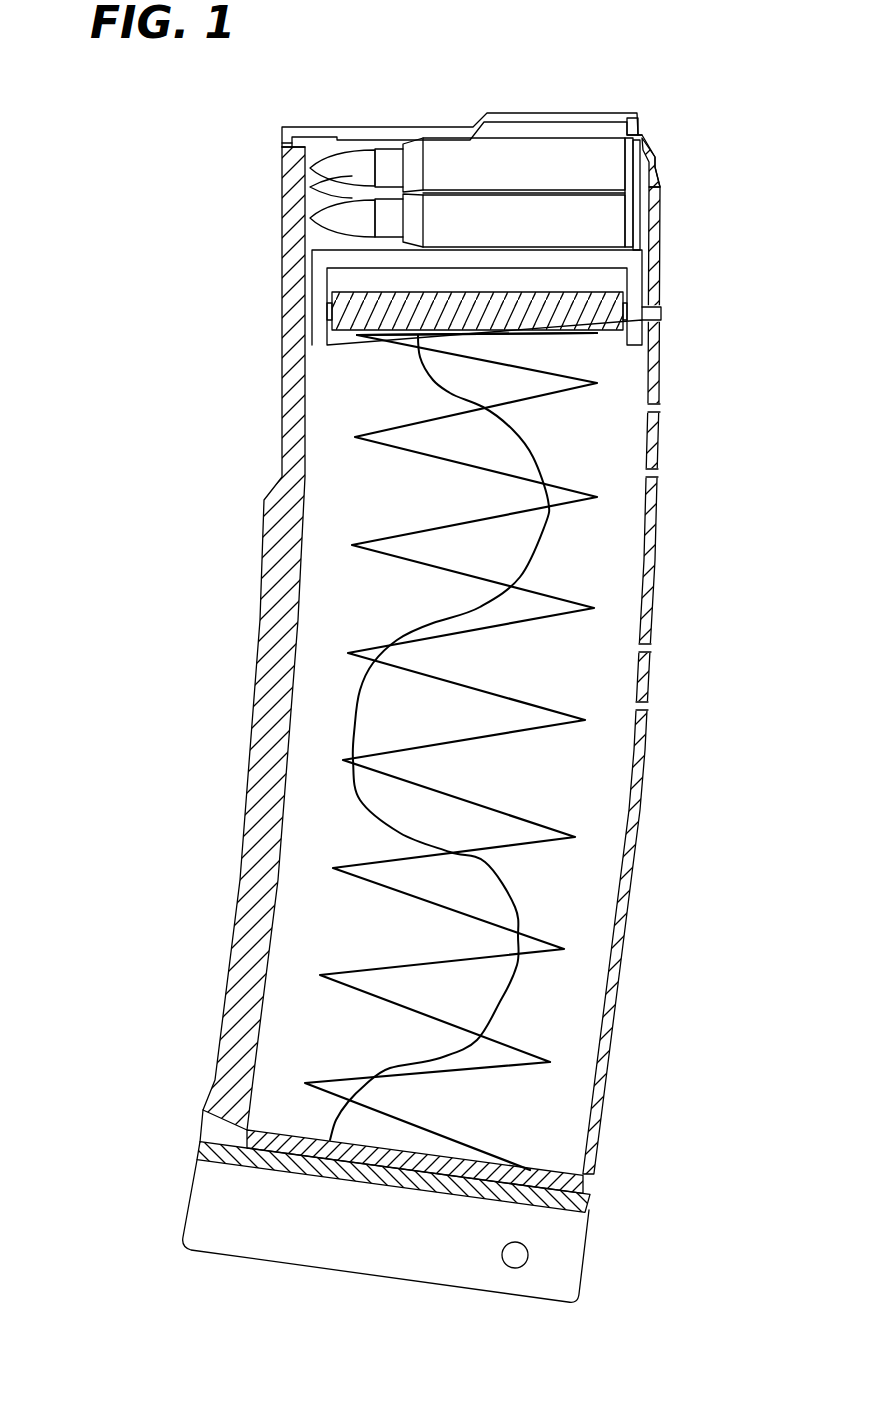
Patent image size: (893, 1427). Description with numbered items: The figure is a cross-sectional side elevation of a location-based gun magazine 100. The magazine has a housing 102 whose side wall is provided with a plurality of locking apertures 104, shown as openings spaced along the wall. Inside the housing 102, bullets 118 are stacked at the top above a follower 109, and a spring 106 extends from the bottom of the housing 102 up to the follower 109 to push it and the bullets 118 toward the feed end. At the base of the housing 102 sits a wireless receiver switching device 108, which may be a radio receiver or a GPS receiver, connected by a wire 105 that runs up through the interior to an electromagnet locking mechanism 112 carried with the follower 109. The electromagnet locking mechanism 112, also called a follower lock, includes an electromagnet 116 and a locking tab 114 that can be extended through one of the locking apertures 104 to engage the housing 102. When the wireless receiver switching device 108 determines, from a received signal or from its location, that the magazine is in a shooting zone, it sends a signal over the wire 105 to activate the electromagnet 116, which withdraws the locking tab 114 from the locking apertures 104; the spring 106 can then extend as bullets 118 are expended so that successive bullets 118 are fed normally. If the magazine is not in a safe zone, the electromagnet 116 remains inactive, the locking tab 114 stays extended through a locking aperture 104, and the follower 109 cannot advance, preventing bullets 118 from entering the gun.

The location-based gun magazine 100 is at (115, 133).
The housing 102 is at (262, 548).
The locking apertures 104 is at (660, 308).
The wire 105 is at (352, 721).
The spring 106 is at (530, 740).
The wireless receiver switching device 108 is at (277, 1227).
The follower 109 is at (634, 268).
The electromagnet locking mechanism 112 is at (347, 298).
The locking tab 114 is at (662, 334).
The electromagnet 116 is at (372, 336).
The bullets 118 is at (358, 160).